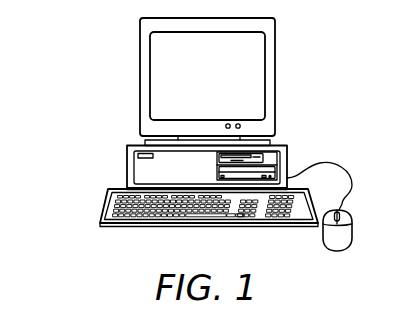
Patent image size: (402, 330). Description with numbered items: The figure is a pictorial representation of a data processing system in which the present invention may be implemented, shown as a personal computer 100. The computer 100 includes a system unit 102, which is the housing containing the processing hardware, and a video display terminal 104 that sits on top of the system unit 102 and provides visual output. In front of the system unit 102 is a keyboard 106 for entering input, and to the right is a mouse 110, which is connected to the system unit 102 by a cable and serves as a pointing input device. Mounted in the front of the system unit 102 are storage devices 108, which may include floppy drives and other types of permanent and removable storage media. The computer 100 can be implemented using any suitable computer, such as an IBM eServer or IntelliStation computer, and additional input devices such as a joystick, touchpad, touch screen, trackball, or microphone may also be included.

The computer 100 is at (83, 67).
The system unit 102 is at (127, 163).
The video display terminal 104 is at (276, 79).
The keyboard 106 is at (123, 228).
The storage devices 108 is at (264, 158).
The mouse 110 is at (337, 251).